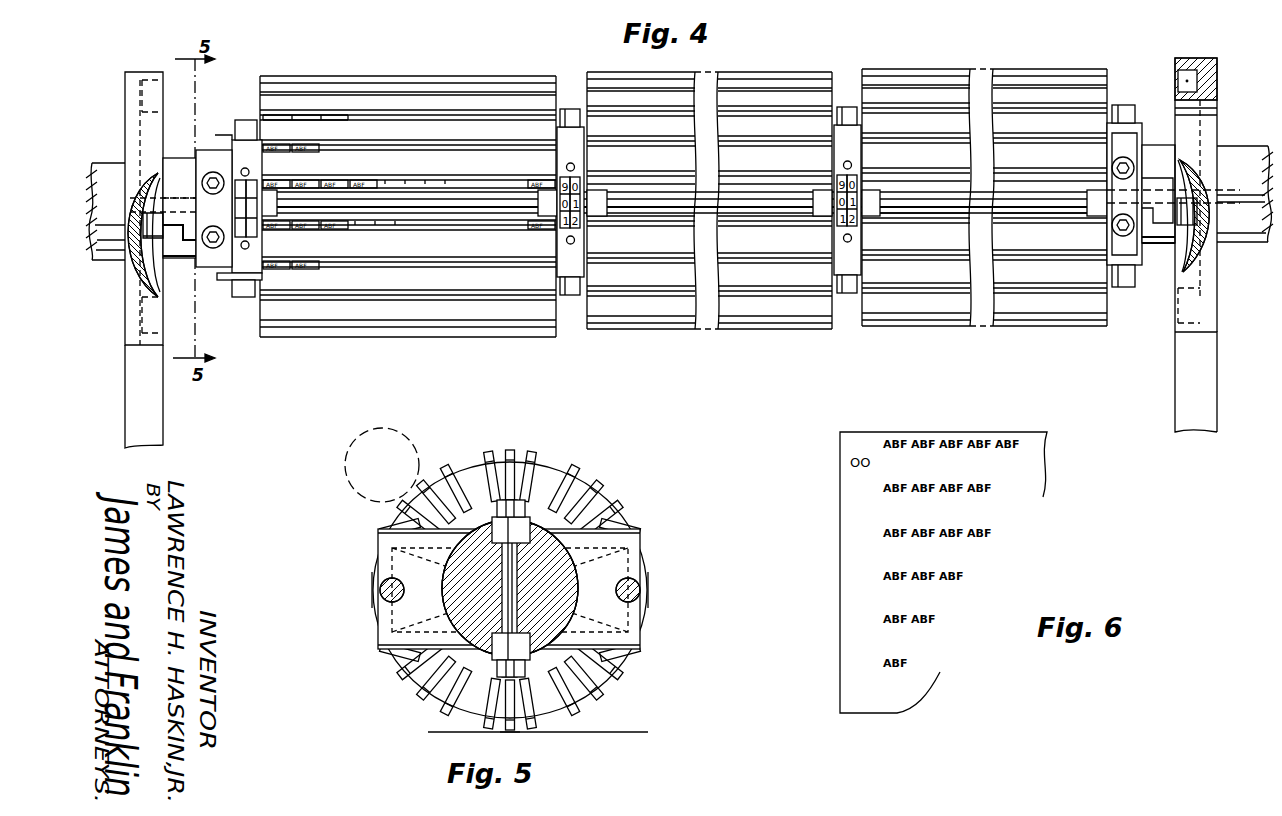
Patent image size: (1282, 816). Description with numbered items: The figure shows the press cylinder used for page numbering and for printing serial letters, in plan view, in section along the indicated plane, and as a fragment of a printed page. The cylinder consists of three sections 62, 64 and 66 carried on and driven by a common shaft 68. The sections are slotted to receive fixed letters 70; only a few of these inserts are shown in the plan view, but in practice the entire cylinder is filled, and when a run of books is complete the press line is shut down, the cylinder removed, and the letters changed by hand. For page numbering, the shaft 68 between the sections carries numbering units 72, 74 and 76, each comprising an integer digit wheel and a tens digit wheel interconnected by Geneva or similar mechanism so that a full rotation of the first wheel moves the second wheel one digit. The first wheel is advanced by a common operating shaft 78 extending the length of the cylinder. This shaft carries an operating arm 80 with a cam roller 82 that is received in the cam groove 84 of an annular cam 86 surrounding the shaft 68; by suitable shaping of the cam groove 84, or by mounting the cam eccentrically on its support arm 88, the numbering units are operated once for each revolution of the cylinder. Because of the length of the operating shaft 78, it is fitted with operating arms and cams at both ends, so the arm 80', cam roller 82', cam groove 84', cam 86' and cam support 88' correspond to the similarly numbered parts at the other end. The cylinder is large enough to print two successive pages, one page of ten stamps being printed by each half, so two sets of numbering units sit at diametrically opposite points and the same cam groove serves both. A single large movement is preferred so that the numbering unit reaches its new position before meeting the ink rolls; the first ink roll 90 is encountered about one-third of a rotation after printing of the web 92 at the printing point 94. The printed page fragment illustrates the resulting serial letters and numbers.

In FIG. 4, the cylinder section 62 is at (433, 76).
In FIG. 4, the cylinder section 64 is at (782, 72).
In FIG. 4, the cylinder section 66 is at (1023, 69).
In FIG. 4, the common shaft 68 is at (110, 163).
In FIG. 5, the common shaft 68 is at (510, 588).
In FIG. 4, the fixed letters 70 is at (300, 180).
In FIG. 5, the fixed letters 70 is at (570, 463).
In FIG. 4, the numbering unit 72 is at (245, 249).
In FIG. 4, the numbering unit 74 is at (578, 242).
In FIG. 4, the numbering unit 76 is at (857, 238).
In FIG. 4, the operating shaft 78 is at (657, 192).
In FIG. 4, the operating arm 80 is at (169, 225).
In FIG. 4, the cam roller 82 is at (129, 235).
In FIG. 4, the cam groove 84 is at (169, 315).
In FIG. 4, the annular cam 86 is at (144, 193).
In FIG. 4, the support arm 88 is at (164, 396).
In FIG. 4, the operating arm 80' is at (1169, 218).
In FIG. 4, the cam roller 82' is at (1213, 218).
In FIG. 4, the cam groove 84' is at (1141, 161).
In FIG. 4, the cam 86' is at (1205, 177).
In FIG. 4, the cam support 88' is at (1215, 382).
In FIG. 5, the ink roll 90 is at (408, 433).
In FIG. 5, the web 92 is at (632, 732).
In FIG. 5, the printing point 94 is at (510, 732).